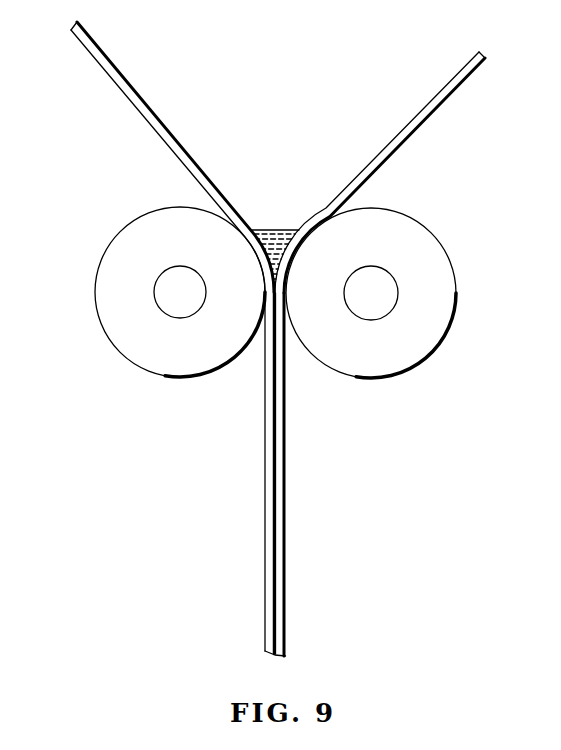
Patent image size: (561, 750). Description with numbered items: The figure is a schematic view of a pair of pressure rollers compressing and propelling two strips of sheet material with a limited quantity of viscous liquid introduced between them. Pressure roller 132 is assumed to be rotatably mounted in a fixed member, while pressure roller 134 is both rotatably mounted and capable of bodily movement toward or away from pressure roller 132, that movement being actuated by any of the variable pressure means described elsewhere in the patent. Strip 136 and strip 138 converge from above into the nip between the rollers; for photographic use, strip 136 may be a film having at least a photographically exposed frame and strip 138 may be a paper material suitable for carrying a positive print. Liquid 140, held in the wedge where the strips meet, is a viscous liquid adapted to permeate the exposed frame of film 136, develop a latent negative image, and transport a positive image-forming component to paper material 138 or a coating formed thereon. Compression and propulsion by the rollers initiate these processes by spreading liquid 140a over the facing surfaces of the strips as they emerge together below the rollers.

The pressure roller 132 is at (435, 302).
The pressure roller 134 is at (112, 294).
The strip 136 is at (393, 146).
The strip 138 is at (167, 133).
The liquid 140 is at (281, 232).
The liquid 140a is at (272, 455).